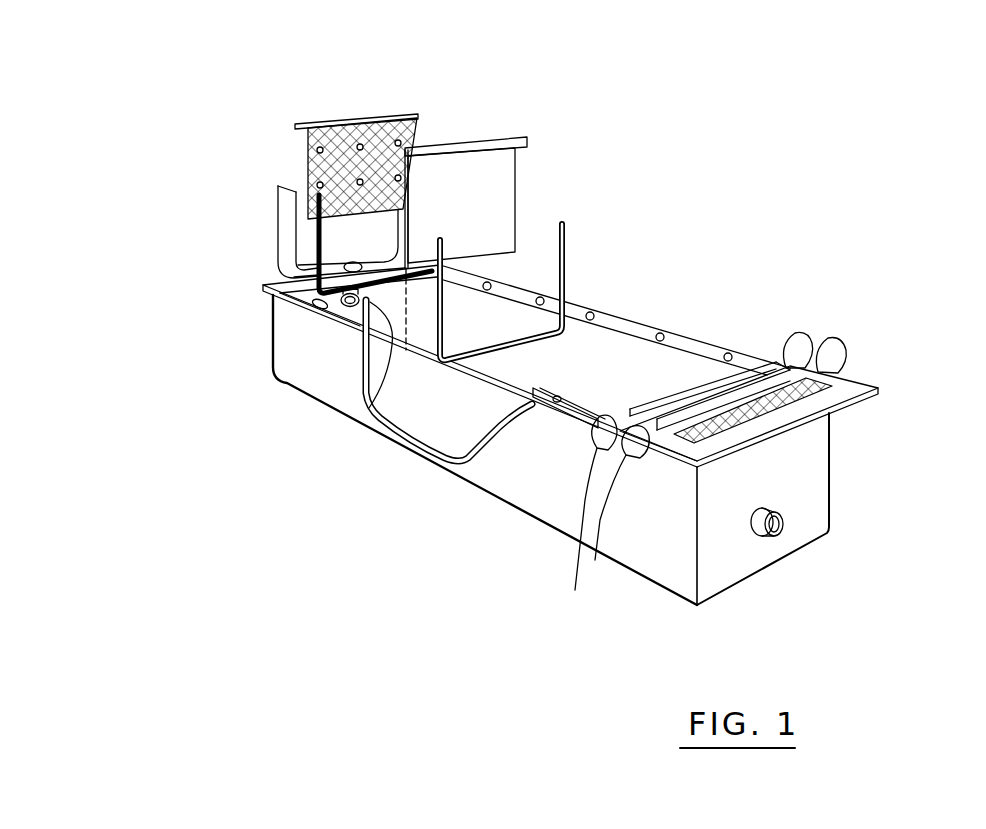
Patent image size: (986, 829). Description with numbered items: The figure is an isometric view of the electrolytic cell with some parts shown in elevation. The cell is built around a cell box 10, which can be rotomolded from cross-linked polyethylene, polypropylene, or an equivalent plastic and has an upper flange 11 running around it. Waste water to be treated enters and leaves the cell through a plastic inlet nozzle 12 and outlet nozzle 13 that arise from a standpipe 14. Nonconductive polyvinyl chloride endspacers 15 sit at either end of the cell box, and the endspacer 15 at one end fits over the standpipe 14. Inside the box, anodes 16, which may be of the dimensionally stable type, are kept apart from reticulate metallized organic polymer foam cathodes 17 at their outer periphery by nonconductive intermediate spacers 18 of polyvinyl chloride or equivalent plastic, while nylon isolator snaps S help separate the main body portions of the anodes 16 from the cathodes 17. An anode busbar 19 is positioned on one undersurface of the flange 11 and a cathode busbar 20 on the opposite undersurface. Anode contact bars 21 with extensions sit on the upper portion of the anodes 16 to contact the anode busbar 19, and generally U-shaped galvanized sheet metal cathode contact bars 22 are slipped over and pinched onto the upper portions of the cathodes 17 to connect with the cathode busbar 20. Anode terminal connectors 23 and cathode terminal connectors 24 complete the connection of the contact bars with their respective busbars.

The cell box 10 is at (522, 508).
The upper flange 11 is at (856, 387).
The inlet nozzle 12 is at (777, 537).
The outlet nozzle 13 is at (385, 352).
The standpipe 14 is at (368, 328).
The endspacer 15 is at (282, 190).
The anode 16 is at (308, 145).
The reticulate metallized organic polymer foam cathode 17 is at (517, 183).
The intermediate spacer 18 is at (312, 247).
The anode busbar 19 is at (667, 447).
The cathode busbar 20 is at (569, 545).
The anode contact bar 21 is at (297, 125).
The cathode contact bar 22 is at (527, 143).
The anode terminal connector 23 is at (575, 590).
The cathode terminal connector 24 is at (833, 350).
The isolator snap S is at (420, 140).